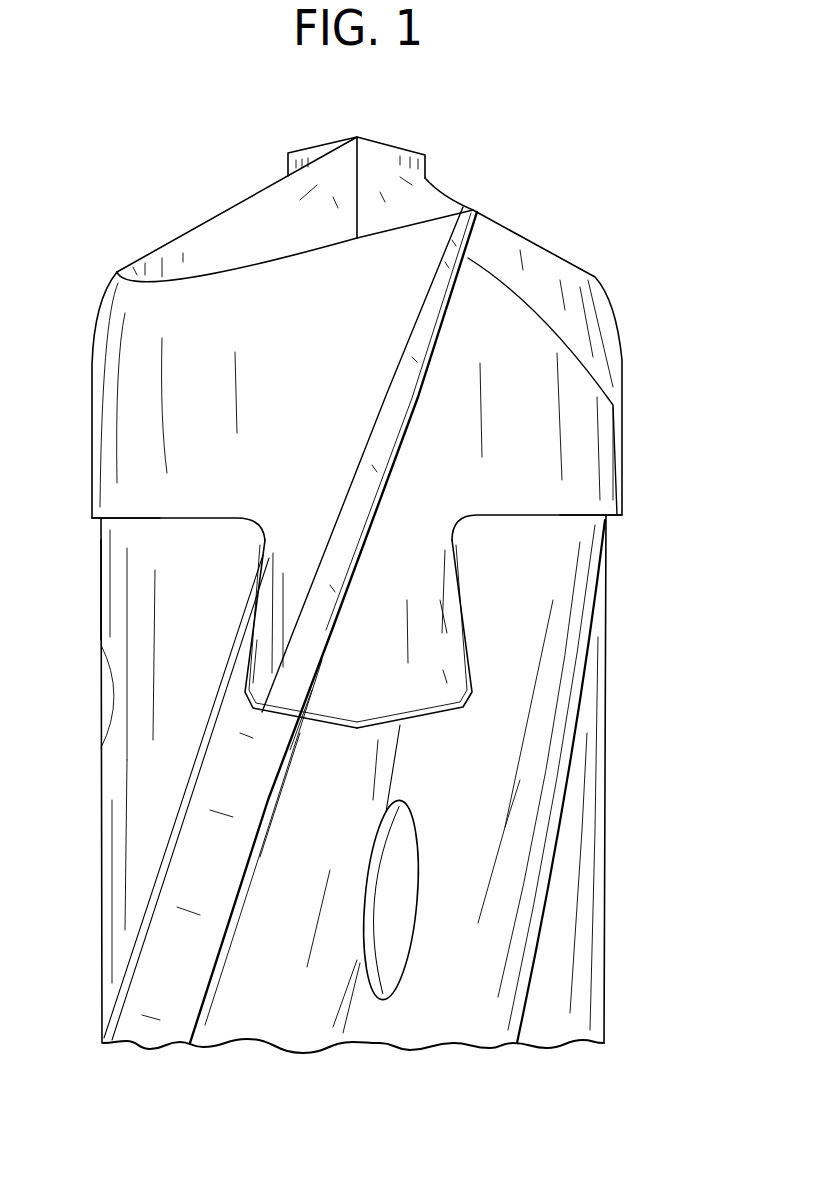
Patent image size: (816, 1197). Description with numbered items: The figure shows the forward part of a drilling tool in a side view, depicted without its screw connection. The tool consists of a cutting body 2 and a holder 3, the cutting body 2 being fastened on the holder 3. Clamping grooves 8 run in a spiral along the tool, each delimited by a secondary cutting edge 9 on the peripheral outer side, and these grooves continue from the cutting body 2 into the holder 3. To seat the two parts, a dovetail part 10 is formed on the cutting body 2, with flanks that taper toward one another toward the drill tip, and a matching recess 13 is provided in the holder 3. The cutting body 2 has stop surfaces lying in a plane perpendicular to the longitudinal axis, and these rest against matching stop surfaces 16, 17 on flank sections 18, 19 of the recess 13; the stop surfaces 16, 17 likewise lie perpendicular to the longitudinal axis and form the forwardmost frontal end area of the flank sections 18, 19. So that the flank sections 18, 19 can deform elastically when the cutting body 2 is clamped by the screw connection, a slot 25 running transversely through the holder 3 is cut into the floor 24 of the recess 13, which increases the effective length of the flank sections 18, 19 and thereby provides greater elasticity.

The cutting body 2 is at (632, 291).
The holder 3 is at (629, 873).
The clamping grooves 8 is at (592, 428).
The secondary cutting edge 9 is at (420, 323).
The dovetail part 10 is at (290, 613).
The recess 13 is at (454, 641).
The stop surface 16 is at (582, 505).
The stop surface 17 is at (130, 509).
The flank section 18 is at (567, 568).
The flank section 19 is at (130, 573).
The floor 24 is at (312, 728).
The slot 25 is at (330, 803).